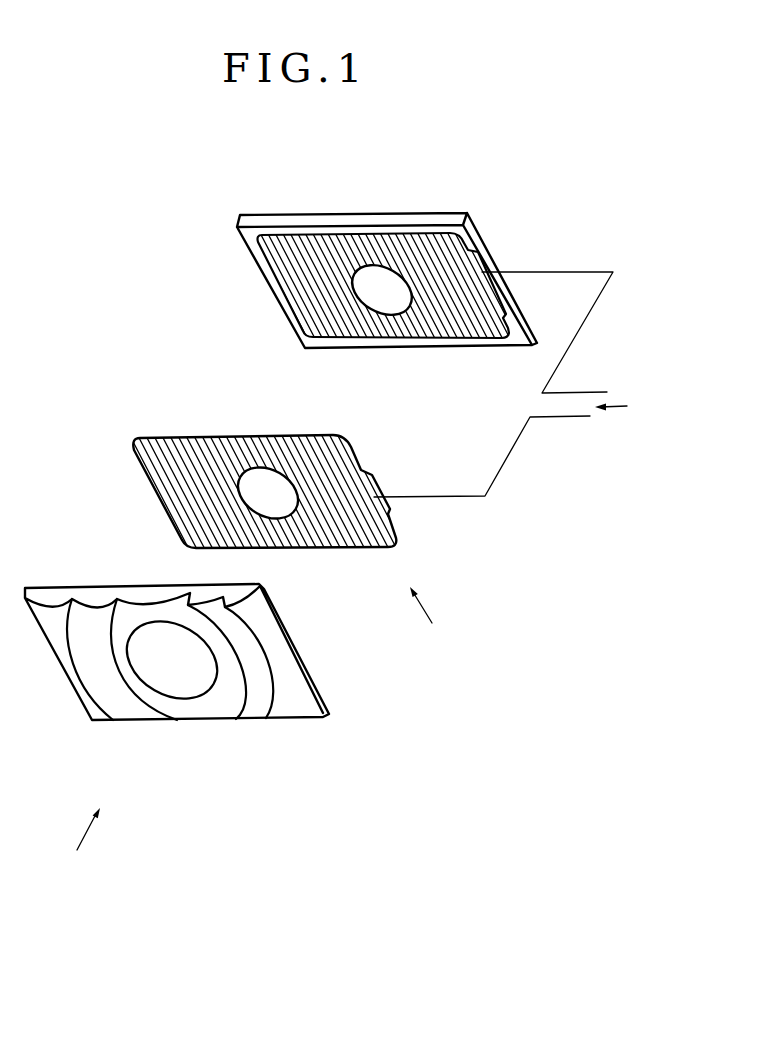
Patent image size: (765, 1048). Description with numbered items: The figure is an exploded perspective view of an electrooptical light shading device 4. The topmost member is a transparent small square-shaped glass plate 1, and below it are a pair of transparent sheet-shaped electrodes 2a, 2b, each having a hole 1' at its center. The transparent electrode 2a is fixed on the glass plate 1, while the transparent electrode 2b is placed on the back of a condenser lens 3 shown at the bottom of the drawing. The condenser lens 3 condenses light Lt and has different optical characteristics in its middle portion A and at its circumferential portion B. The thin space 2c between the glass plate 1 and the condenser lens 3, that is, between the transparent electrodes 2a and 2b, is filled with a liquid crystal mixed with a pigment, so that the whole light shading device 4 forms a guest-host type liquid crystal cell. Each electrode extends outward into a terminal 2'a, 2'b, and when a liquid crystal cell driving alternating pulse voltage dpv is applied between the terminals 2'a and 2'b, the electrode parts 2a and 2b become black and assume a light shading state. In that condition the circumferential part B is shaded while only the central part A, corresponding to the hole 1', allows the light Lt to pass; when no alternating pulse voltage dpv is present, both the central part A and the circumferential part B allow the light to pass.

The glass plate 1 is at (387, 249).
The hole 1' is at (325, 348).
The transparent electrode 2a is at (292, 242).
The transparent electrode 2b is at (183, 450).
The gap between electrodes 2c is at (305, 395).
The terminal 2'a is at (567, 332).
The terminal 2'b is at (482, 461).
The alternating pulse voltage dpv is at (636, 406).
The condenser lens 3 is at (60, 588).
The light shading device 4 is at (450, 646).
The middle portion A is at (187, 690).
The circumferential portion B is at (263, 702).
The light Lt is at (83, 845).